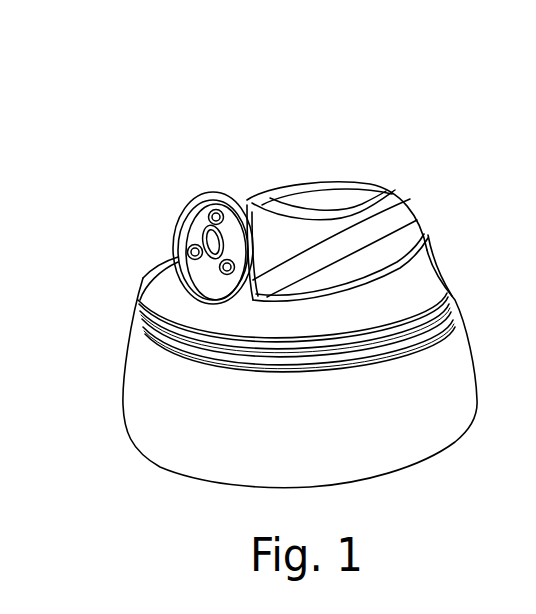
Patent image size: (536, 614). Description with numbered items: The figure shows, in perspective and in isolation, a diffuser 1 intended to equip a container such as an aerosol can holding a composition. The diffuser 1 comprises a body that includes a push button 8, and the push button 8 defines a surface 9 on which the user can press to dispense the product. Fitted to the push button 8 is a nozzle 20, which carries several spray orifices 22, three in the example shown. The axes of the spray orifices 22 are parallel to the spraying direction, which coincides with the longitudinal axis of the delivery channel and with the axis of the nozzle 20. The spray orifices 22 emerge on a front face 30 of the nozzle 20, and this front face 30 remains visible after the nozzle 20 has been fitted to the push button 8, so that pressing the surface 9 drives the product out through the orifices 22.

The diffuser 1 is at (284, 250).
The push button 8 is at (397, 235).
The surface 9 is at (318, 198).
The nozzle 20 is at (199, 202).
The spray orifices 22 is at (215, 205).
The front face 30 is at (240, 197).